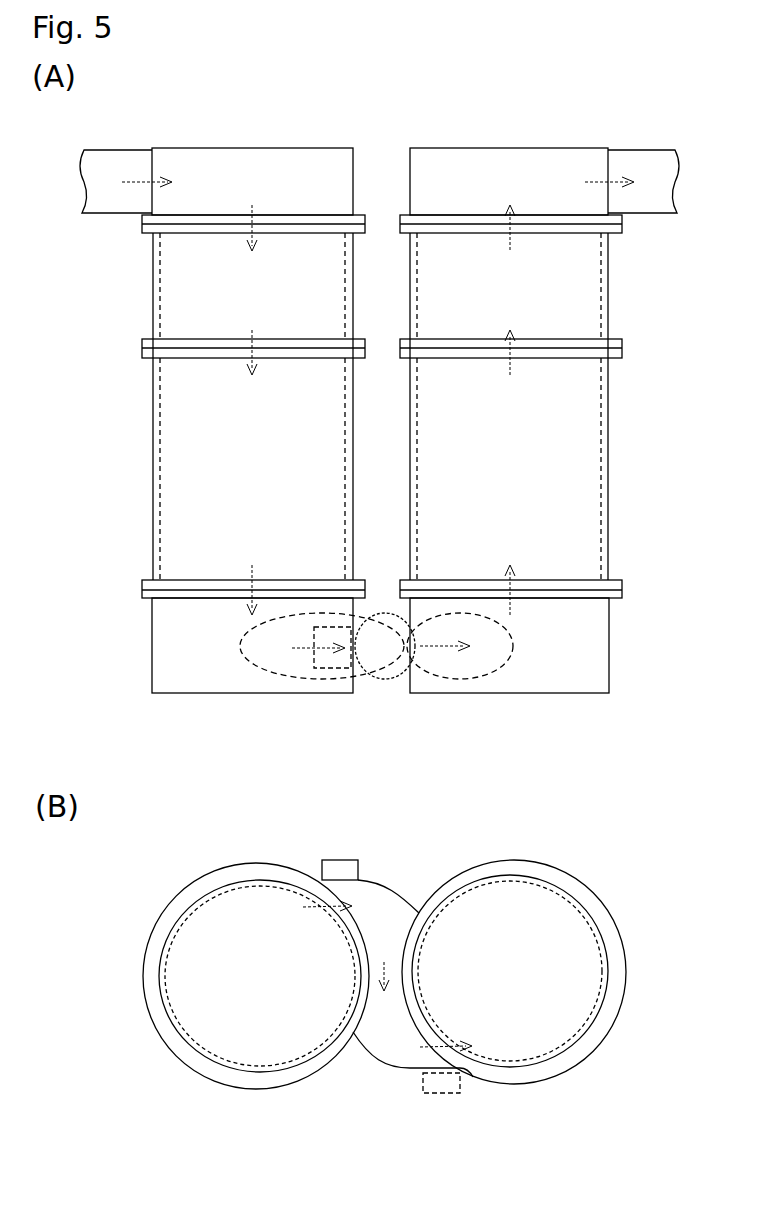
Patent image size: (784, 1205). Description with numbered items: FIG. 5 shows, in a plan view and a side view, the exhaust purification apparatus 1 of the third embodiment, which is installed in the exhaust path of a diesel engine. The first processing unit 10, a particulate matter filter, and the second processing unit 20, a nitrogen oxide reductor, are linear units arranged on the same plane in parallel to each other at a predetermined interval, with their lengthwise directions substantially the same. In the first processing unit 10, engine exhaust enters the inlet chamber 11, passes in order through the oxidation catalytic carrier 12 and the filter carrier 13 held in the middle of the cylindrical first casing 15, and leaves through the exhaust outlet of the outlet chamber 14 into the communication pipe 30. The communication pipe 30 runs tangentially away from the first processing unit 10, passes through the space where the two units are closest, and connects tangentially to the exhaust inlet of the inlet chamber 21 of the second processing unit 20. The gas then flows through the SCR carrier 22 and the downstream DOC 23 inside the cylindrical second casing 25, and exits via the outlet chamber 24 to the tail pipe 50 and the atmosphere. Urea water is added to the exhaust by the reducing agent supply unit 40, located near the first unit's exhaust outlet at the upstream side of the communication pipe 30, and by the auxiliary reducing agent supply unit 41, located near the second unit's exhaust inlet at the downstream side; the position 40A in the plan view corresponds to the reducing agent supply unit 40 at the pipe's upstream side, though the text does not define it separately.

The exhaust purification apparatus 1 is at (171, 453).
The first processing unit 10 is at (118, 409).
The inlet chamber 11 is at (250, 148).
The oxidation catalytic carrier (DOC) 12 is at (150, 294).
The filter carrier (DPF) 13 is at (165, 470).
The outlet chamber 14 is at (160, 648).
The first casing 15 is at (153, 542).
The second processing unit 20 is at (654, 408).
The inlet chamber 21 is at (600, 650).
The reduction catalytic carrier (SCR carrier) 22 is at (600, 470).
The DOC 23 is at (614, 288).
The outlet chamber 24 is at (508, 148).
The second casing 25 is at (610, 545).
The communication pipe 30 is at (392, 678).
The reducing agent supply unit 40 is at (336, 860).
The sensor 40A is at (335, 668).
The auxiliary reducing agent supply unit 41 is at (445, 1093).
The tail pipe 50 is at (655, 158).